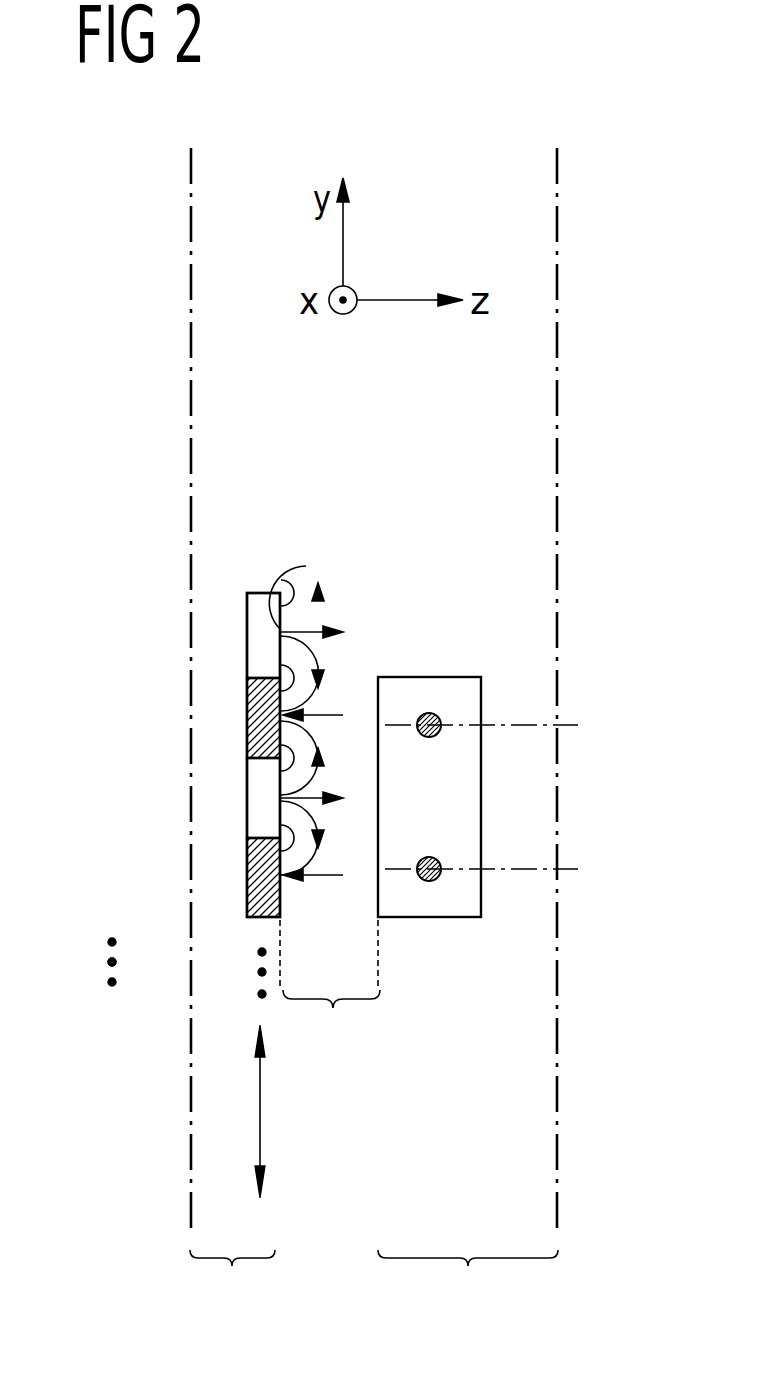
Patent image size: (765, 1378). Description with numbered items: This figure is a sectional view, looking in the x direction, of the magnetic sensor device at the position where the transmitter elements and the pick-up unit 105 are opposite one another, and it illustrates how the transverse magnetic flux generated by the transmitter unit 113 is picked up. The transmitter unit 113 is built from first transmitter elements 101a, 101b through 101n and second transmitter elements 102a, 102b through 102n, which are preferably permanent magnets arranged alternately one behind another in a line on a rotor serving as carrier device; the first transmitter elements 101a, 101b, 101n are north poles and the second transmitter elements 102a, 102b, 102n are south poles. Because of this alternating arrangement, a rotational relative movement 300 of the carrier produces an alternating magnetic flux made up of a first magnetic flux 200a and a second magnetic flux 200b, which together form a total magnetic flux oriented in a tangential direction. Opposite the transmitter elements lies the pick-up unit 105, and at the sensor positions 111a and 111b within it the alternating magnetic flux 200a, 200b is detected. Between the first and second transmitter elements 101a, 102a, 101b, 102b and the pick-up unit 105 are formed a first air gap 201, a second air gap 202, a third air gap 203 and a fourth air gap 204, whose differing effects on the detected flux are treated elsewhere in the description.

The first transmitter element 101a is at (247, 618).
The second transmitter element 102a is at (247, 712).
The first transmitter element 101b is at (247, 791).
The second transmitter element 102b is at (247, 862).
The first transmitter element 101n is at (170, 1005).
The second transmitter element 102n is at (115, 1046).
The pick-up unit 105 is at (458, 677).
The sensor position 111a is at (430, 713).
The sensor position 111b is at (429, 881).
The transmitter unit 113 is at (235, 958).
The first magnetic flux 200a is at (325, 632).
The second magnetic flux 200b is at (328, 706).
The first air gap 201 is at (330, 989).
The second air gap 202 is at (426, 1032).
The third air gap 203 is at (341, 1082).
The fourth air gap 204 is at (421, 1082).
The relative movement 300 is at (260, 1131).